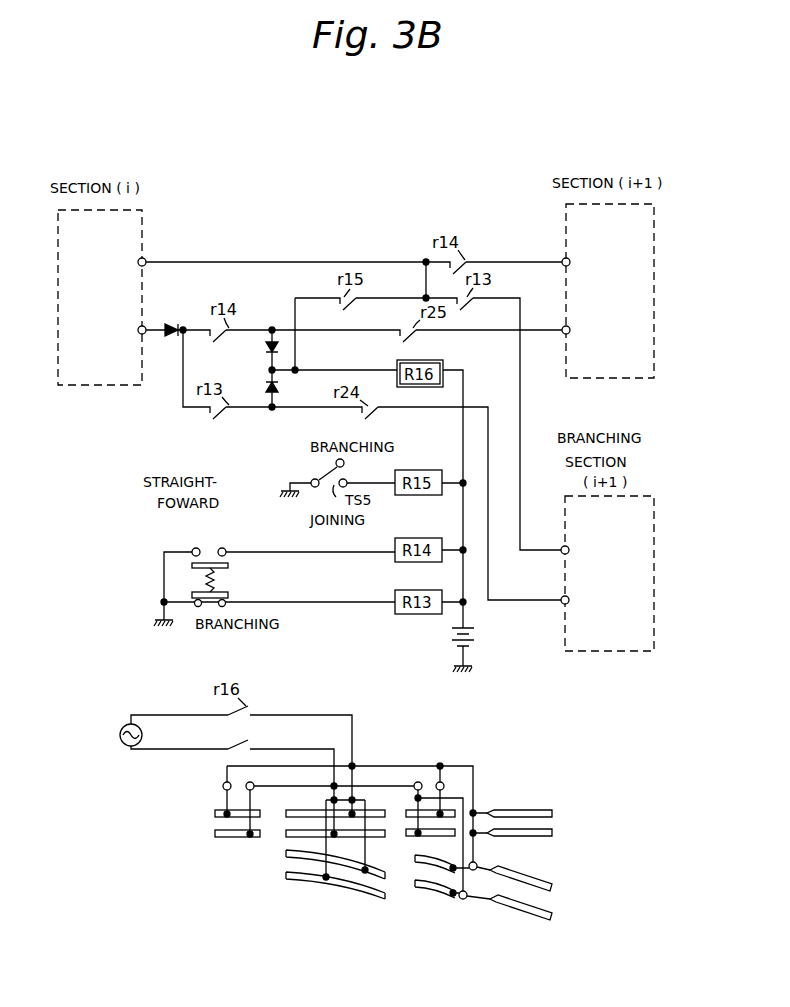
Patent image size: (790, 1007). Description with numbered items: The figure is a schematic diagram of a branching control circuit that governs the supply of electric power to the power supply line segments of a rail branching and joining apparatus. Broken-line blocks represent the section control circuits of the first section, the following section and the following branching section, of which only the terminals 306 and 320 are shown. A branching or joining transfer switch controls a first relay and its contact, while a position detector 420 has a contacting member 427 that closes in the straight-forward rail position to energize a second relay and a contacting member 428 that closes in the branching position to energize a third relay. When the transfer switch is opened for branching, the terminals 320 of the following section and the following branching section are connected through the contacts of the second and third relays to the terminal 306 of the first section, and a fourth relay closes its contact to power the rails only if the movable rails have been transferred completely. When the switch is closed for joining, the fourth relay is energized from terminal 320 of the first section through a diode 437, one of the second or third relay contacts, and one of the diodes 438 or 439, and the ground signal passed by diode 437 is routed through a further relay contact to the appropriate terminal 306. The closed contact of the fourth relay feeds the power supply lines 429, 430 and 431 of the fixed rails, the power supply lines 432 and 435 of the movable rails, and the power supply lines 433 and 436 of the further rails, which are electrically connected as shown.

The terminal 306 is at (139, 260).
The terminal 320 is at (139, 330).
The diode 437 is at (173, 336).
The diode 438 is at (267, 352).
The diode 439 is at (268, 388).
The position detector 420 is at (193, 549).
The contacting member 427 is at (224, 548).
The contacting member 428 is at (228, 596).
The power supply line 429 is at (214, 834).
The power supply line 430 is at (556, 822).
The power supply line 431 is at (540, 902).
The power supply line 432 is at (285, 834).
The power supply line 433 is at (285, 874).
The power supply line 435 is at (406, 828).
The power supply line 436 is at (412, 884).